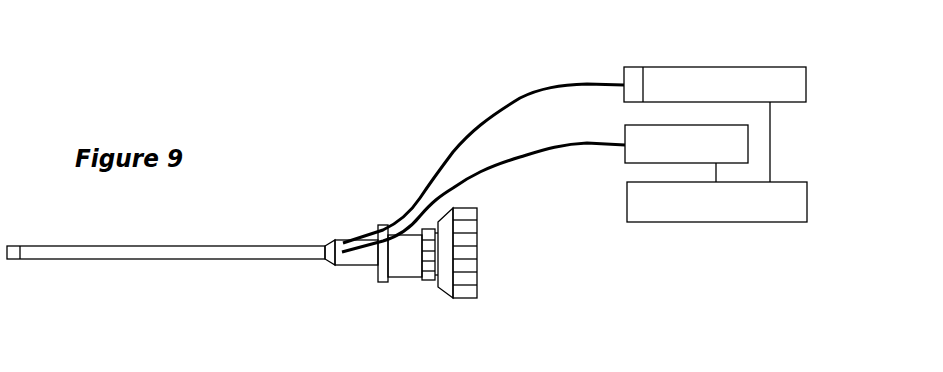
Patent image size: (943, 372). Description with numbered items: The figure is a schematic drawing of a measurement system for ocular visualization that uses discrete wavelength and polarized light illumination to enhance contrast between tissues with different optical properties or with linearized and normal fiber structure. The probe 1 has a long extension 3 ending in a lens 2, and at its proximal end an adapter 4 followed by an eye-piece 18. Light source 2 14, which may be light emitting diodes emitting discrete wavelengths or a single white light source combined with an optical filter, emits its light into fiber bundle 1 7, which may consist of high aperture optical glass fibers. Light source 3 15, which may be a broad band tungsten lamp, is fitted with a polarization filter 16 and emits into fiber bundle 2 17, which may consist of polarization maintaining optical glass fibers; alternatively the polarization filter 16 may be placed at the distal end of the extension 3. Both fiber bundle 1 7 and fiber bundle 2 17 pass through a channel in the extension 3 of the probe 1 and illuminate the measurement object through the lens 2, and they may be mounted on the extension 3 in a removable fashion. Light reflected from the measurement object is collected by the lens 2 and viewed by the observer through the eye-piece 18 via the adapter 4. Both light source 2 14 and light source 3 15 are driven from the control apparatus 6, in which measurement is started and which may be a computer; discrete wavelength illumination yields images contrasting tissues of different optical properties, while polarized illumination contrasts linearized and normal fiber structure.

The probe 1 is at (287, 217).
The lens 2 is at (14, 253).
The extension 3 is at (143, 253).
The adapter 4 is at (397, 263).
The control apparatus 6 is at (695, 215).
The fiber bundle 1 7 is at (448, 200).
The light source 2 14 is at (626, 131).
The light source 3 15 is at (725, 72).
The polarization filter 16 is at (636, 72).
The fiber bundle 2 17 is at (510, 106).
The eye-piece 18 is at (468, 268).